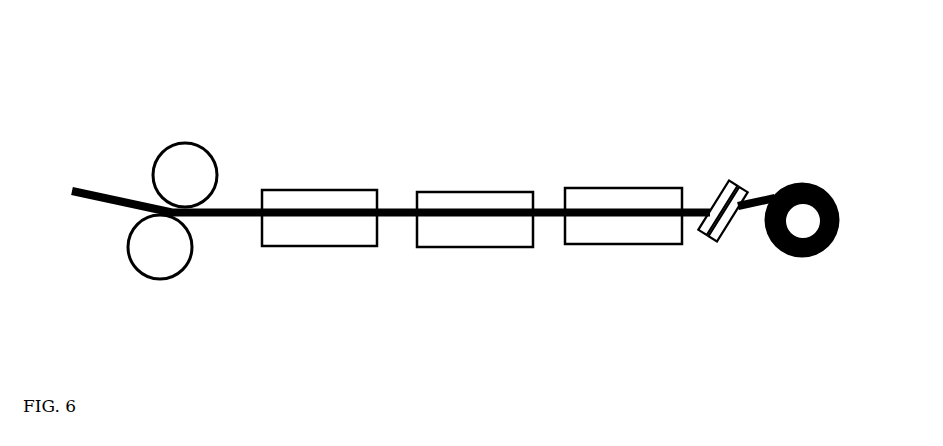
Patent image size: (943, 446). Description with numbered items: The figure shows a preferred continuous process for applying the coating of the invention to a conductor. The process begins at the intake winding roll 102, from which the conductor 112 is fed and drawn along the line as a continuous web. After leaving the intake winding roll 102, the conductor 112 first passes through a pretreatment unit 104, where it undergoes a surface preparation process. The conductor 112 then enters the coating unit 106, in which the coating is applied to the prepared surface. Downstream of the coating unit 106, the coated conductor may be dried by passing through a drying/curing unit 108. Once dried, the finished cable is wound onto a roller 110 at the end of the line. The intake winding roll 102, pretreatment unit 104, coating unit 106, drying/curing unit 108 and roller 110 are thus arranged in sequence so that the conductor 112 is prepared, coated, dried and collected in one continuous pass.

The intake winding roll 102 is at (175, 173).
The pretreatment unit 104 is at (322, 235).
The coating unit 106 is at (461, 197).
The drying/curing unit 108 is at (600, 223).
The roller 110 is at (788, 187).
The conductor 112 is at (235, 207).